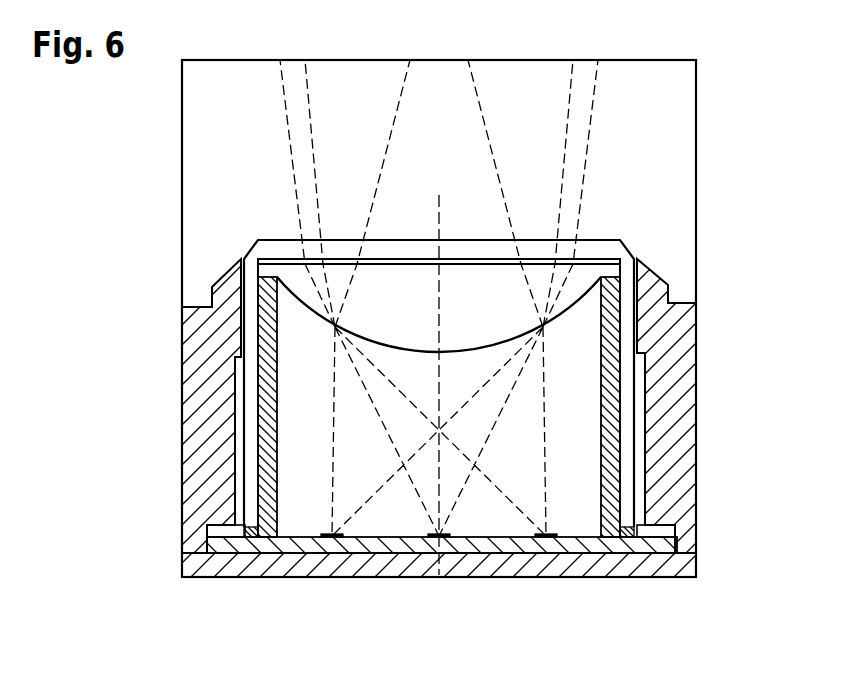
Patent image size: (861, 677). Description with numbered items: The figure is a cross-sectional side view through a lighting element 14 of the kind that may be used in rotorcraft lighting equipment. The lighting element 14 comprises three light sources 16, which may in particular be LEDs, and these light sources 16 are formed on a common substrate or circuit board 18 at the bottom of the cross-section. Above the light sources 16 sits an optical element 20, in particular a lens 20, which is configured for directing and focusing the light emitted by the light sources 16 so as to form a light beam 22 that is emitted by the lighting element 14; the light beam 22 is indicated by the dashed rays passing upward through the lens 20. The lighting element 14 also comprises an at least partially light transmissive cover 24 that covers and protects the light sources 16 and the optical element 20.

The lighting element 14 is at (748, 98).
The light source 16 is at (322, 528).
The common substrate 18 is at (587, 548).
The optical element 20 is at (576, 325).
The light beam 22 is at (277, 160).
The light transmissive cover 24 is at (605, 229).